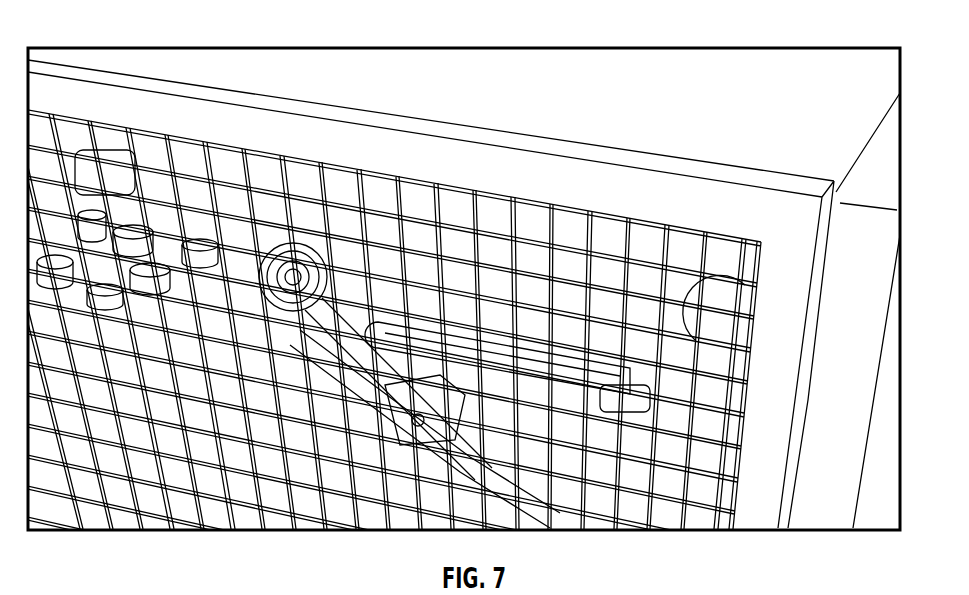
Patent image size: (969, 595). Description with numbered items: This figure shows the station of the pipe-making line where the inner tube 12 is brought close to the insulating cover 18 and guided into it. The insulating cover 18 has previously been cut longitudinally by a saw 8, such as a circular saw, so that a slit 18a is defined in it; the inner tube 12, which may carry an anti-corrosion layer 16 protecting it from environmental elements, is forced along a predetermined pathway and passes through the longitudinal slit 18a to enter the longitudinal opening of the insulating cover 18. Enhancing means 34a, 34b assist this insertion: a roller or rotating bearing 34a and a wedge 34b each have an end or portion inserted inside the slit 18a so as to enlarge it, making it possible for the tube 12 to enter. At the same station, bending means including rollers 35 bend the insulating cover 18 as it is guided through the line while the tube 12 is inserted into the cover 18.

The saw 8 is at (418, 420).
The inner tube 12 is at (540, 248).
The anti-corrosion layer 16 is at (336, 300).
The insulating cover 18 is at (548, 530).
The slit 18a is at (343, 258).
The roller or rotating bearing 34a is at (182, 215).
The wedge 34b is at (150, 205).
The rollers 35 is at (283, 435).